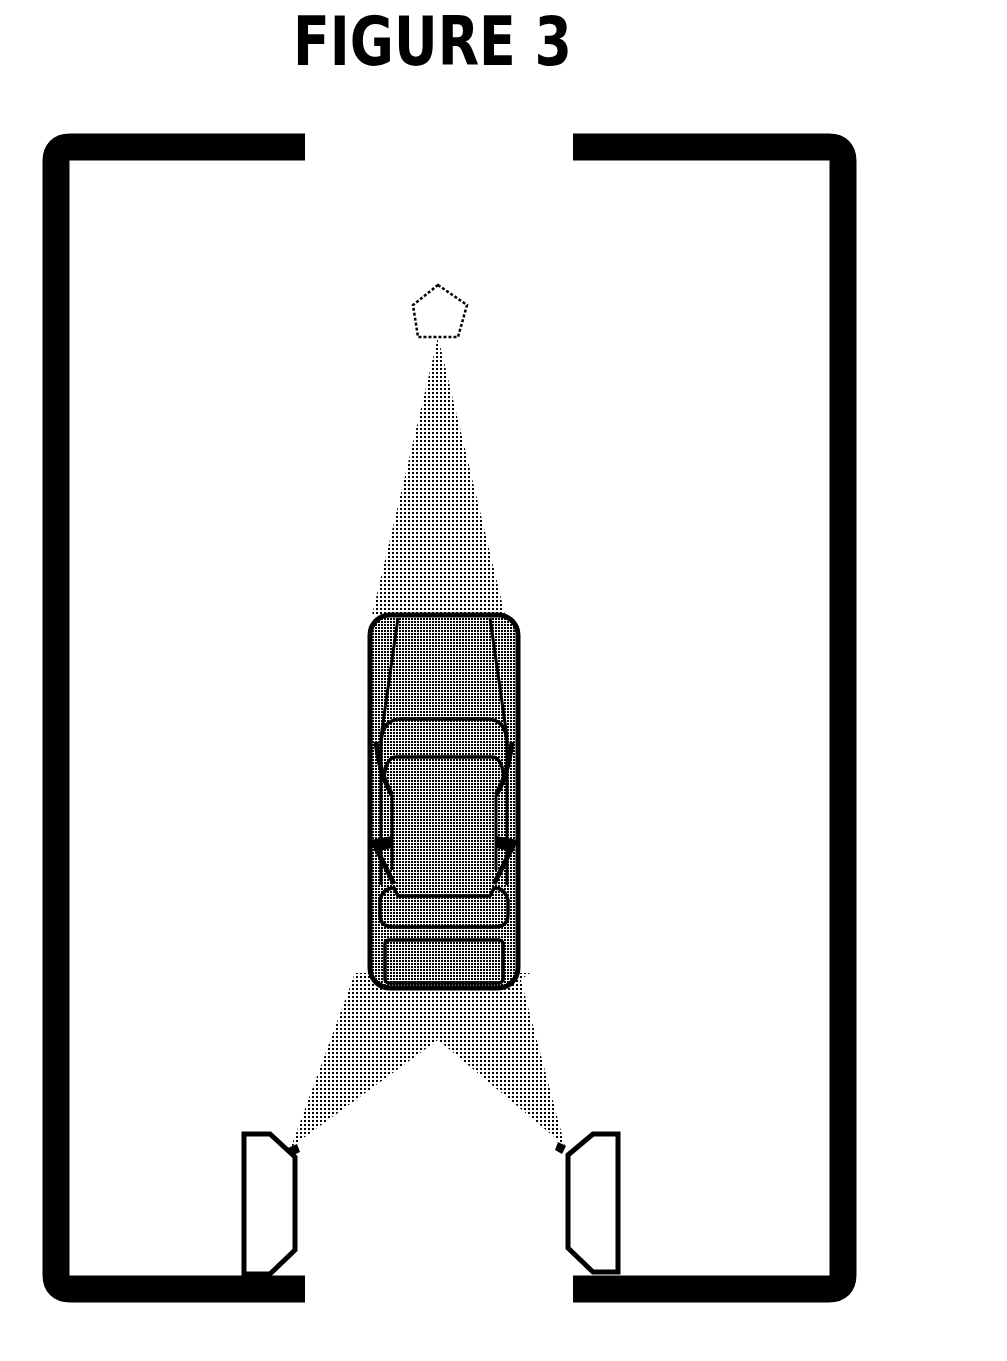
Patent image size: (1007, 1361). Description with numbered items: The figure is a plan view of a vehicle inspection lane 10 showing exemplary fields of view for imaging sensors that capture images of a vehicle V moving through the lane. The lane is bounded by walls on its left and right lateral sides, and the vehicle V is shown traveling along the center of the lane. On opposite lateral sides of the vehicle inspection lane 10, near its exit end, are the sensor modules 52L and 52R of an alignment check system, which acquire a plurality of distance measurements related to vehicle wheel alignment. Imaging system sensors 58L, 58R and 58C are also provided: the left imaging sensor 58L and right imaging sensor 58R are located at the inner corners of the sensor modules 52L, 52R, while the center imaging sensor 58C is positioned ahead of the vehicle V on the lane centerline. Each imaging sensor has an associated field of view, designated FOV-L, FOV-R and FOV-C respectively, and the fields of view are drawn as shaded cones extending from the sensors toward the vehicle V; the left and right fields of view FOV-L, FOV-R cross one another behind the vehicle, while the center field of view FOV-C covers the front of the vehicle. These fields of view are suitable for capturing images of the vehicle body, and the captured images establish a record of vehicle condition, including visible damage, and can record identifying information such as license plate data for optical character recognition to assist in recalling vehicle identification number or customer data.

The vehicle inspection lane 10 is at (215, 317).
The vehicle V is at (358, 801).
The center imaging system sensor 58C is at (526, 306).
The field of view of center imaging sensor FOV-C is at (526, 476).
The field of view of left imaging sensor FOV-L is at (322, 1060).
The field of view of right imaging sensor FOV-R is at (557, 1059).
The left alignment check sensor module 52L is at (201, 1204).
The right alignment check sensor module 52R is at (665, 1203).
The left imaging system sensor 58L is at (359, 1173).
The right imaging system sensor 58R is at (491, 1131).